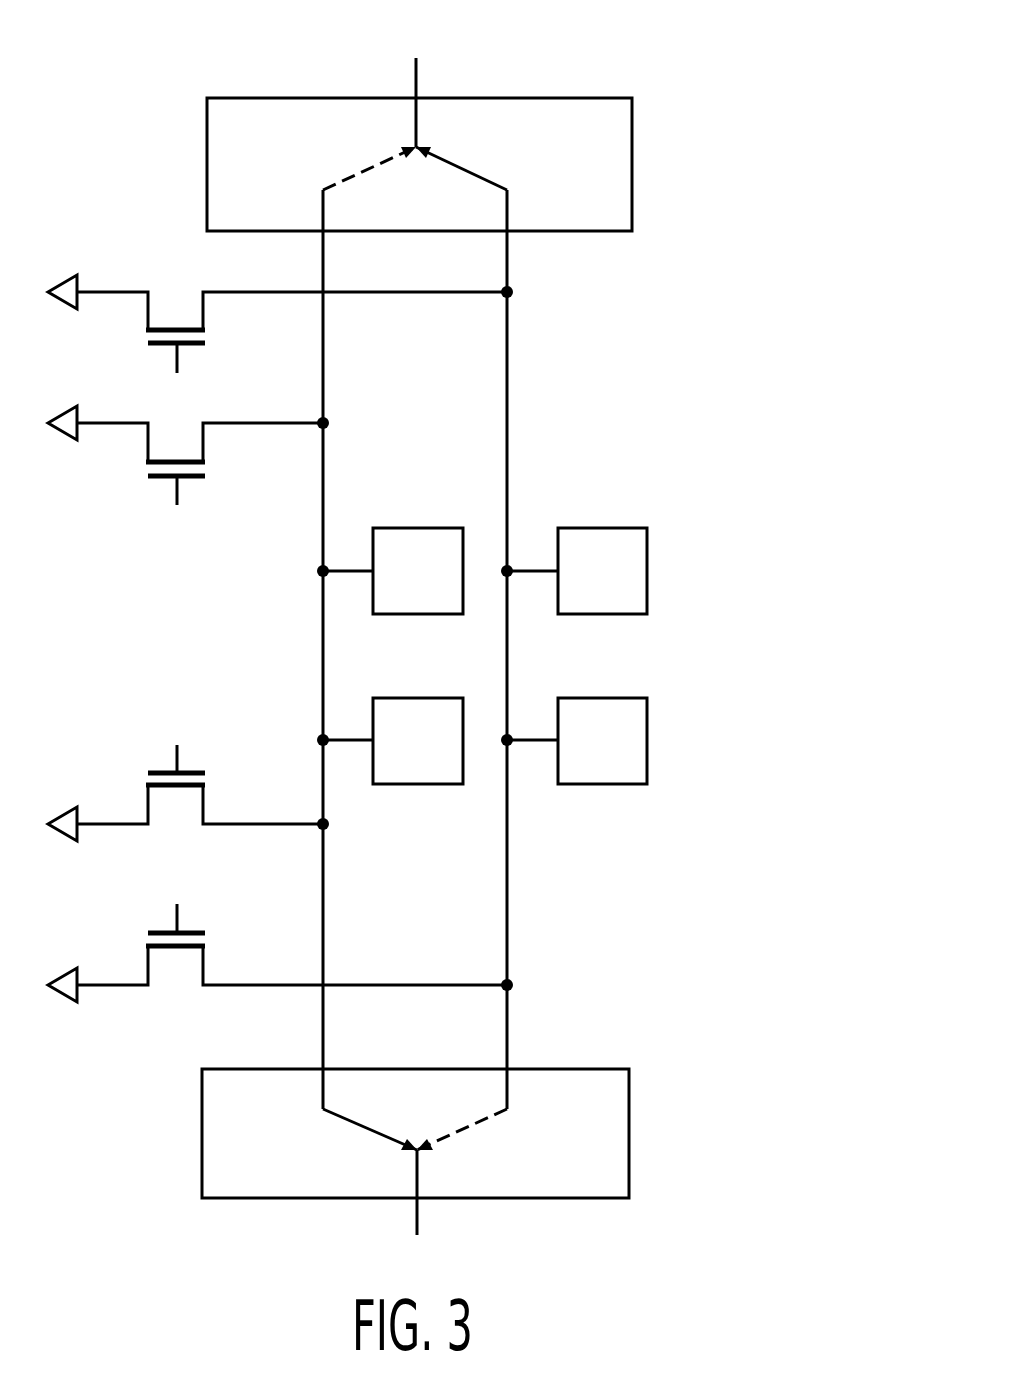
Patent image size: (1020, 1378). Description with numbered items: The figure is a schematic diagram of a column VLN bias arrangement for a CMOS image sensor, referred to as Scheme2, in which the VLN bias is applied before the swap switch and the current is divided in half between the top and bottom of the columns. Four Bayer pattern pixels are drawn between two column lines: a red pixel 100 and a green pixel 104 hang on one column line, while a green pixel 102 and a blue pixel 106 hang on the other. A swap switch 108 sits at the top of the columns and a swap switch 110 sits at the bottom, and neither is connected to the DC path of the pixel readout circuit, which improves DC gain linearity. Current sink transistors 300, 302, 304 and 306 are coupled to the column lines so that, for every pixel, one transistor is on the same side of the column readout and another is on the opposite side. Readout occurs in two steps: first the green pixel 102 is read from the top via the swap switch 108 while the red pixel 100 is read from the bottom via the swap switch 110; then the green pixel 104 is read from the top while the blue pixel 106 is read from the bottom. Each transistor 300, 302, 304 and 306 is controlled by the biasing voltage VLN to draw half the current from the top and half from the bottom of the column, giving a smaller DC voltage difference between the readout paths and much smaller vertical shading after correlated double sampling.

The red pixel 100 is at (407, 528).
The green pixel 102 is at (647, 552).
The green pixel 104 is at (410, 698).
The blue pixel 106 is at (647, 714).
The swap switch 108 is at (565, 98).
The swap switch 110 is at (629, 1102).
The current sink transistor 300 is at (177, 297).
The current sink transistor 302 is at (178, 432).
The current sink transistor 304 is at (185, 818).
The current sink transistor 306 is at (178, 975).